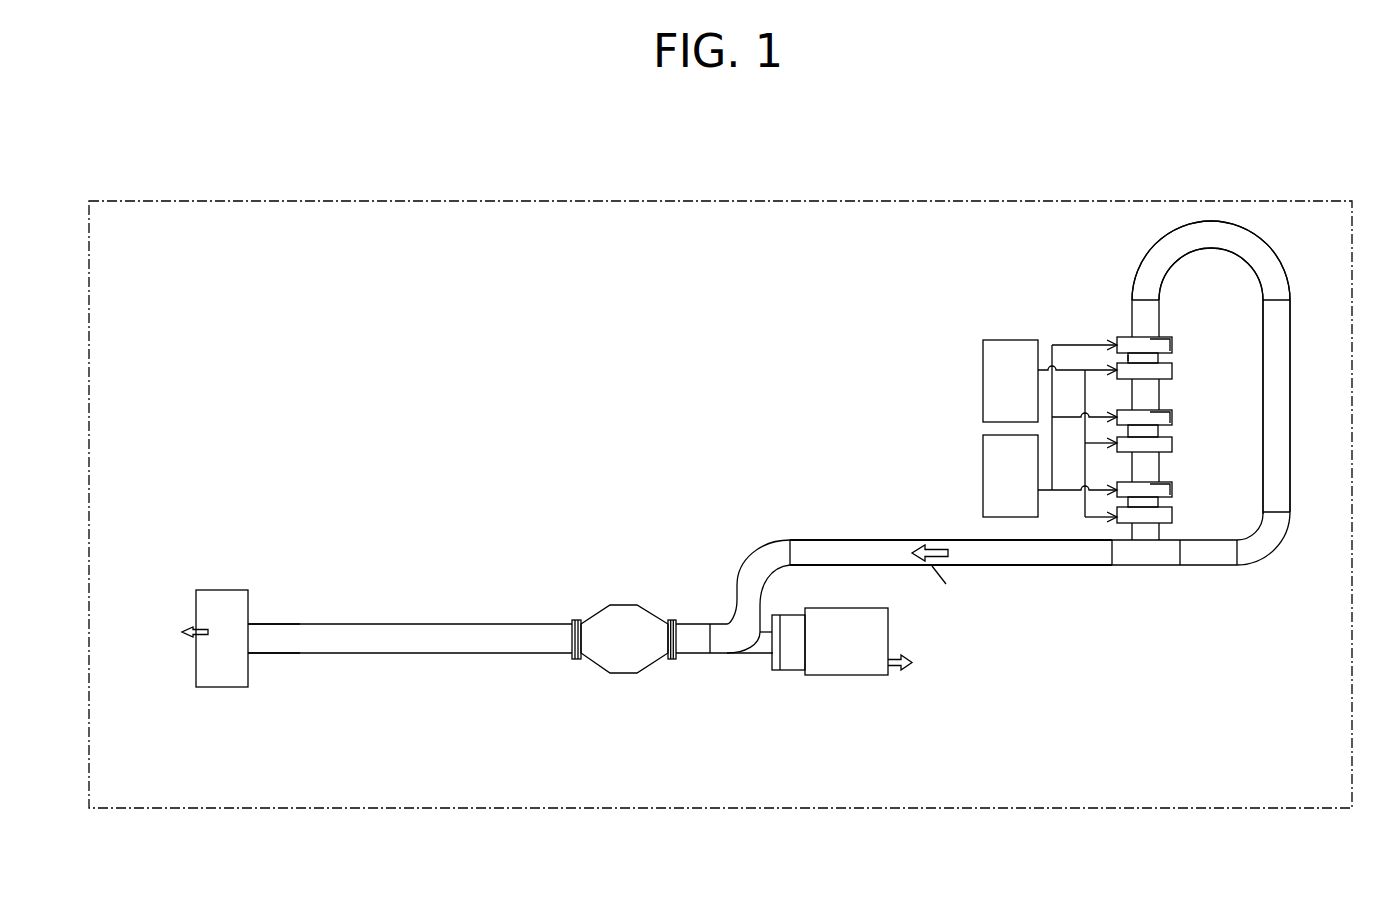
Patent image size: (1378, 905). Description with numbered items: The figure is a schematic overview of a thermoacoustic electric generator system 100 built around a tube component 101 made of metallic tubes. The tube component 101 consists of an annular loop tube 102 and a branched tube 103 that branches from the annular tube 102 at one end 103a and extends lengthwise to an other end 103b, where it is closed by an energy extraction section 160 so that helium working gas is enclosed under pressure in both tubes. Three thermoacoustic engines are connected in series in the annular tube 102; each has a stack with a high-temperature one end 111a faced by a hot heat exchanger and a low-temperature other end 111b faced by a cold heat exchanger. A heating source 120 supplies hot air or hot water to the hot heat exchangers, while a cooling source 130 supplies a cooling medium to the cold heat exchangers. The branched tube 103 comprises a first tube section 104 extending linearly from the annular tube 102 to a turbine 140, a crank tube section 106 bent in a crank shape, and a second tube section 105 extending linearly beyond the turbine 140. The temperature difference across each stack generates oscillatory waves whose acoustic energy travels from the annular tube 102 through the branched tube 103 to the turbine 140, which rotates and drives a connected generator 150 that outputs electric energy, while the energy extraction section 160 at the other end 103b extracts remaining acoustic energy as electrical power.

The thermoacoustic electric generator system 100 is at (394, 199).
The tube component 101 is at (1176, 579).
The annular tube 102 is at (1292, 368).
The branched tube 103 is at (1016, 569).
The one end 103a is at (1104, 556).
The other end 103b is at (258, 645).
The first tube section 104 is at (870, 545).
The second tube section 105 is at (423, 632).
The crank tube section 106 is at (740, 575).
The one end 111a is at (1122, 357).
The other end 111b is at (1145, 355).
The heating source 120 is at (982, 393).
The cooling source 130 is at (982, 483).
The turbine 140 is at (597, 611).
The generator 150 is at (833, 678).
The energy extraction section 160 is at (229, 587).